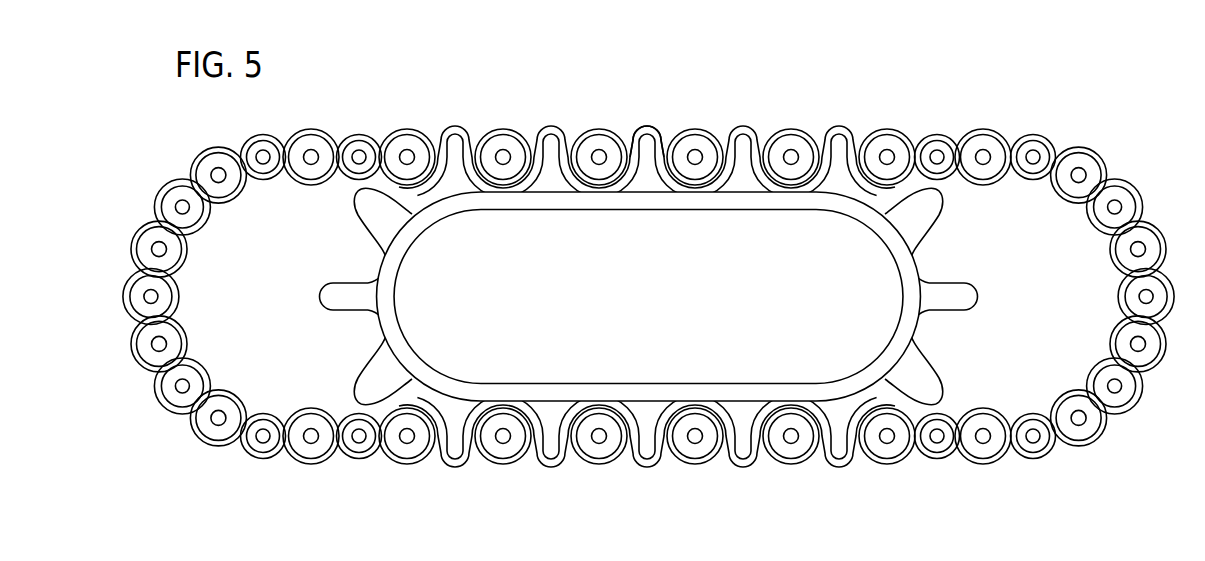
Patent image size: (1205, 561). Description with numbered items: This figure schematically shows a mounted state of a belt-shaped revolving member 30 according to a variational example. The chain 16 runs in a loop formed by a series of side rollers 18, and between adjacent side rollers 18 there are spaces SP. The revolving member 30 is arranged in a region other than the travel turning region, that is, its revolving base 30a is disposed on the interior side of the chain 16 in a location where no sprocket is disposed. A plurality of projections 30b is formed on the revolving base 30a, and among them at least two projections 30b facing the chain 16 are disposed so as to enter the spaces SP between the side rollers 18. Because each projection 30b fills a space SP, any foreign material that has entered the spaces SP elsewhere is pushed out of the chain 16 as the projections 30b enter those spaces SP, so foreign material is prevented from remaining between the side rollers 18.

The chain 16 is at (657, 272).
The side rollers 18 is at (590, 128).
The revolving member 30 is at (649, 259).
The revolving base 30a is at (683, 259).
The projections 30b is at (649, 259).
The space SP is at (647, 113).